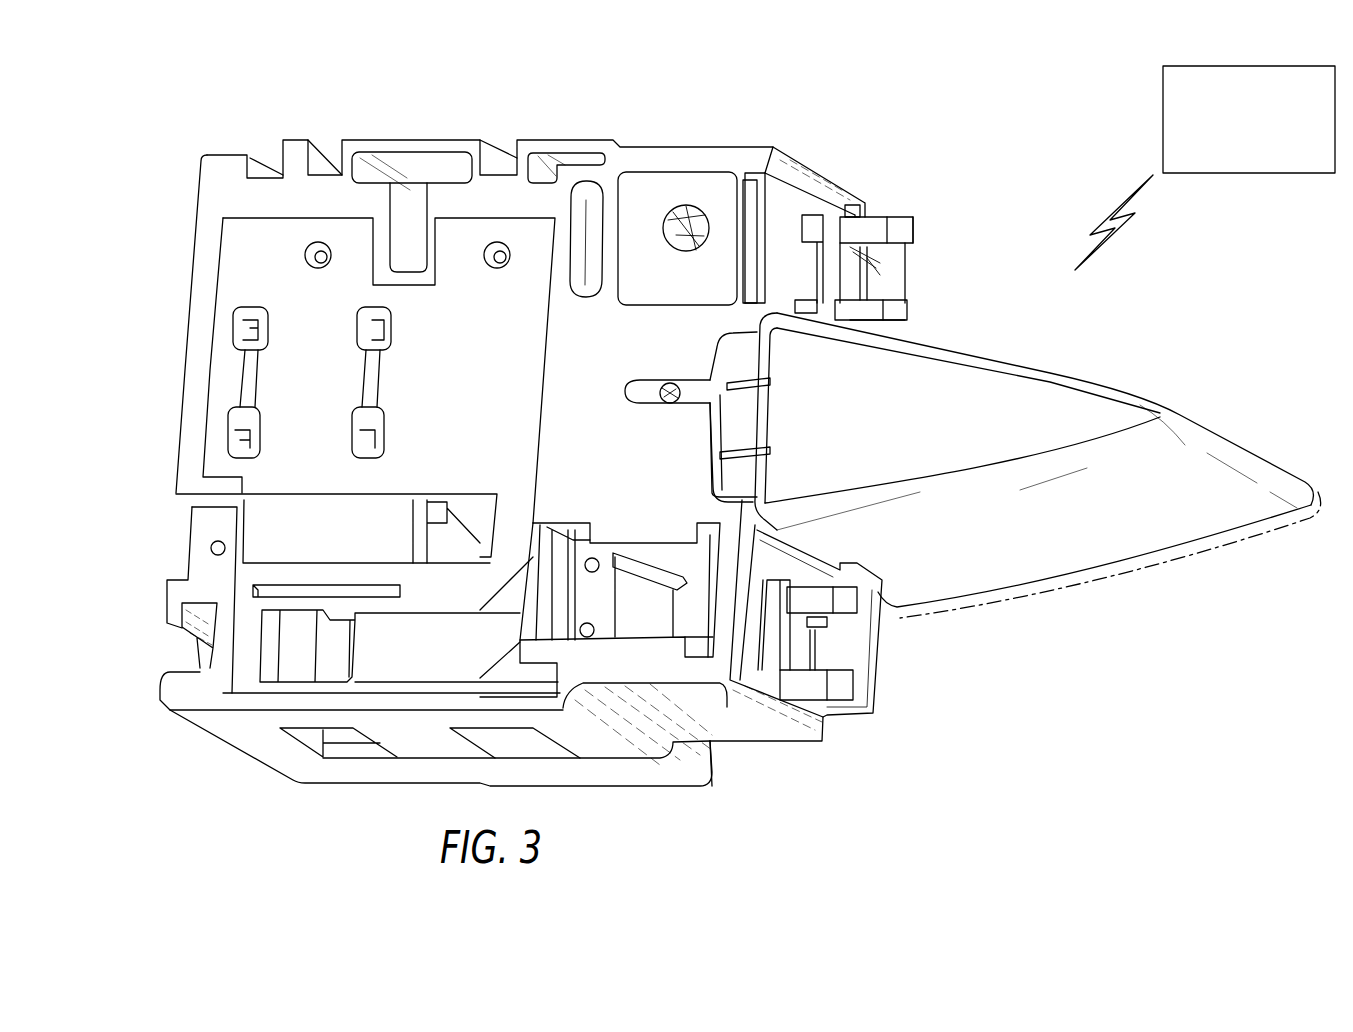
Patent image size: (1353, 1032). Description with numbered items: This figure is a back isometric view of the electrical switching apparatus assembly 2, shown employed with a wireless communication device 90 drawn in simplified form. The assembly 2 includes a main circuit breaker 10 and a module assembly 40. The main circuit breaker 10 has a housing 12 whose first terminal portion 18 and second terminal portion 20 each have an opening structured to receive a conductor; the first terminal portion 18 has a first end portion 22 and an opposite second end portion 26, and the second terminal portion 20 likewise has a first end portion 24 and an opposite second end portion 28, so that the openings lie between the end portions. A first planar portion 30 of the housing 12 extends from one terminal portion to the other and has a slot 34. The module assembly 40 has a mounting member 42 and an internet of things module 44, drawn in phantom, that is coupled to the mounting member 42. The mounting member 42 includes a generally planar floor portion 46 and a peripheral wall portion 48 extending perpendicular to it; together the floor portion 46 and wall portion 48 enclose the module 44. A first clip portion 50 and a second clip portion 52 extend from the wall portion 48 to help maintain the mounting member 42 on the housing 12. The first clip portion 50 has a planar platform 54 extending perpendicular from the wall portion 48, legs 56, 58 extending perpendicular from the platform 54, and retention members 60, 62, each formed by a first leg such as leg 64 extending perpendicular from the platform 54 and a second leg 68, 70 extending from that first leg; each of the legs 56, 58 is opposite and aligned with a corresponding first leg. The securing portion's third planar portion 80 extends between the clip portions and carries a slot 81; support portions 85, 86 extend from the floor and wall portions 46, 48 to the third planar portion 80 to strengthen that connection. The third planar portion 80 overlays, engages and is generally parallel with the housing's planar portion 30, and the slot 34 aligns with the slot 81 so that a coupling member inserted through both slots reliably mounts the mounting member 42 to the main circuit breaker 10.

The electrical switching apparatus assembly 2 is at (1079, 125).
The main circuit breaker 10 is at (684, 800).
The housing 12 is at (598, 752).
The first terminal portion 18 is at (808, 165).
The second terminal portion 20 is at (705, 722).
The first end portion 22 is at (851, 206).
The first end portion 24 is at (822, 725).
The second end portion 26 is at (777, 147).
The second end portion 28 is at (722, 678).
The first planar portion 30 is at (655, 432).
The slot 34 is at (733, 446).
The module assembly 40 is at (1006, 248).
The mounting member 42 is at (1038, 482).
The internet of things (IOT) module 44 is at (1125, 598).
The floor portion 46 is at (1070, 395).
The peripheral wall portion 48 is at (1185, 525).
The first clip portion 50 is at (883, 246).
The second clip portion 52 is at (897, 690).
The platform 54 is at (905, 258).
The leg 56 is at (802, 243).
The leg 58 is at (803, 298).
The retention member 60 is at (900, 206).
The retention member 62 is at (918, 313).
The first leg 64 is at (868, 255).
The second leg 68 is at (870, 225).
The second leg 70 is at (893, 320).
The third planar portion 80 is at (697, 383).
The slot 81 is at (660, 382).
The support portion 85 is at (757, 383).
The support portion 86 is at (737, 463).
The wireless communication device 90 is at (1262, 178).